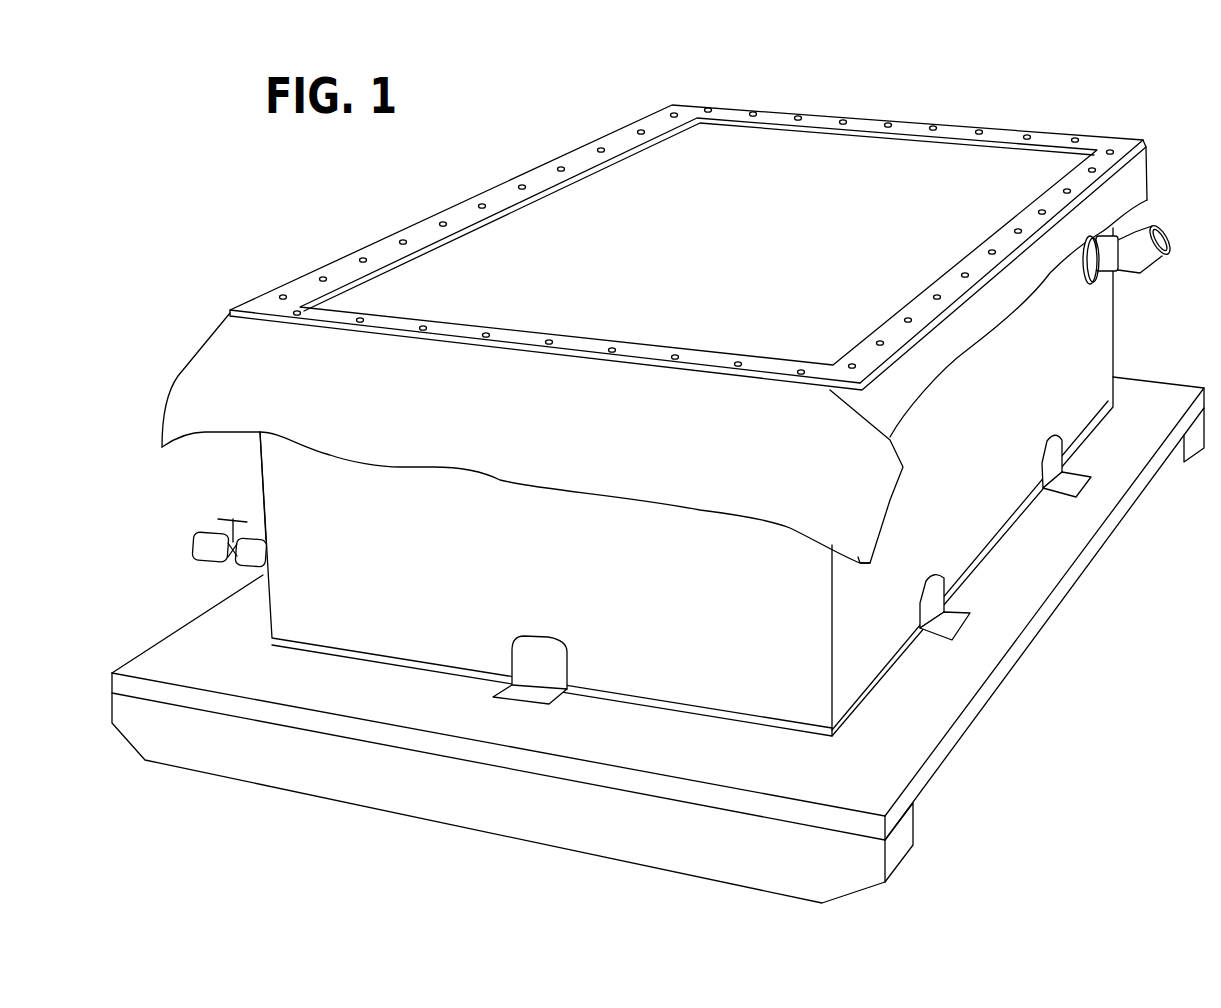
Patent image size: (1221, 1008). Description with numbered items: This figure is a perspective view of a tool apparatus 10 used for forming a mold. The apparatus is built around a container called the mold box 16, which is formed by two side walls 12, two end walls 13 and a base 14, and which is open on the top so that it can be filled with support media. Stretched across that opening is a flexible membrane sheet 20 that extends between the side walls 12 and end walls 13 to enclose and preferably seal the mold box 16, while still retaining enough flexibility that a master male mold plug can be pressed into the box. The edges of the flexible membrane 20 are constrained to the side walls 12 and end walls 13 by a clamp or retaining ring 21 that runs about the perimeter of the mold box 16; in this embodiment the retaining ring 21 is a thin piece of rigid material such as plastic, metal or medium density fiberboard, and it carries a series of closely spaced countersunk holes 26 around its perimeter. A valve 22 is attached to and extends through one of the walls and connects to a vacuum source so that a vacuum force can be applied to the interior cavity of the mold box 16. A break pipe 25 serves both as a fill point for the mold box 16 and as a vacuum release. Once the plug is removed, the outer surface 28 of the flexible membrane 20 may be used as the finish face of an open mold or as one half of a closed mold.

The tool apparatus 10 is at (1118, 116).
The side wall 12 is at (561, 585).
The end wall 13 is at (1000, 444).
The base 14 is at (985, 563).
The mold box 16 is at (258, 465).
The flexible membrane sheet 20 is at (213, 367).
The retaining ring 21 is at (533, 170).
The valve 22 is at (217, 563).
The break pipe 25 is at (1165, 260).
The countersunk holes 26 is at (843, 121).
The outer surface 28 is at (754, 259).